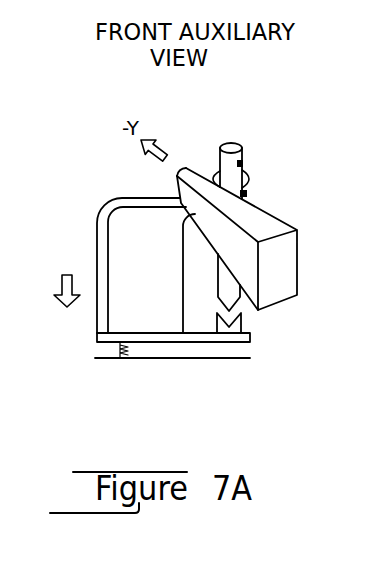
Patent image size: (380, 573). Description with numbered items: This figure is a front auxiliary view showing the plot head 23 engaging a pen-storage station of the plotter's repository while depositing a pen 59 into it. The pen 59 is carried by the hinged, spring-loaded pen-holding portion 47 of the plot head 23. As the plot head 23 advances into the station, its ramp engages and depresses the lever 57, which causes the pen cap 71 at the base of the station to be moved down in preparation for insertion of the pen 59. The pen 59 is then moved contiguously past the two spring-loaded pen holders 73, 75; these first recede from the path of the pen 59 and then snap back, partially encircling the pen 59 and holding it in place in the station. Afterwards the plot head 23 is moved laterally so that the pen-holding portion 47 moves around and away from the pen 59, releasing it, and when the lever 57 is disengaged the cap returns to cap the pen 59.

The plot head 23 is at (291, 229).
The spring-loaded pen-holding portion 47 is at (251, 184).
The lever 57 is at (141, 198).
The pen 59 is at (231, 143).
The pen cap 71 is at (244, 319).
The pen holder 73 is at (244, 163).
The pen holder 75 is at (248, 196).